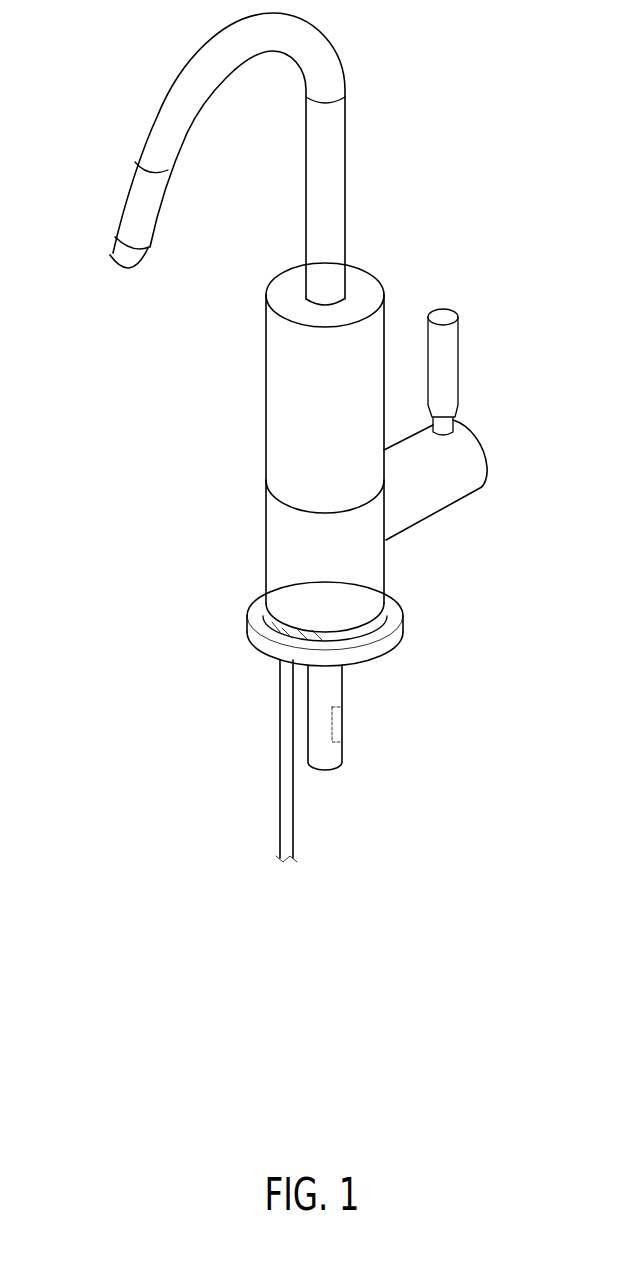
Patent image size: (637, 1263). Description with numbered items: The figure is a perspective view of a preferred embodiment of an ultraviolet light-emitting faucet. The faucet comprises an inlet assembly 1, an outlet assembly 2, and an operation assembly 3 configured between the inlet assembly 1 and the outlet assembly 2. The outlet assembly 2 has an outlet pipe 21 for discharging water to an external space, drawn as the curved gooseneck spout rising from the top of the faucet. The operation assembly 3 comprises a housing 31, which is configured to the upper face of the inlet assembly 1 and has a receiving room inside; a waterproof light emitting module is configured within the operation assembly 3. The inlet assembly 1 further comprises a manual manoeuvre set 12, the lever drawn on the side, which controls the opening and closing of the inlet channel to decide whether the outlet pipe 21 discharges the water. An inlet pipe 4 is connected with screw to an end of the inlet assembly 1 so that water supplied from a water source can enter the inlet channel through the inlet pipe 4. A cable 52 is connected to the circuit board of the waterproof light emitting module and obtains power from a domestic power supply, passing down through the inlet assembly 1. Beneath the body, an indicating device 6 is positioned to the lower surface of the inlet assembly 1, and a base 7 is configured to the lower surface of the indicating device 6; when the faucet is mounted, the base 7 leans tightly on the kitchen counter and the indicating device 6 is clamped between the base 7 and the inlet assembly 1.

The inlet assembly 1 is at (254, 447).
The outlet assembly 2 is at (350, 210).
The outlet pipe 21 is at (195, 78).
The operation assembly 3 is at (257, 388).
The housing 31 is at (285, 460).
The manual manoeuvre set 12 is at (477, 497).
The base 7 is at (366, 628).
The indicating device 6 is at (365, 628).
The inlet pipe 4 is at (333, 687).
The cable 52 is at (285, 748).